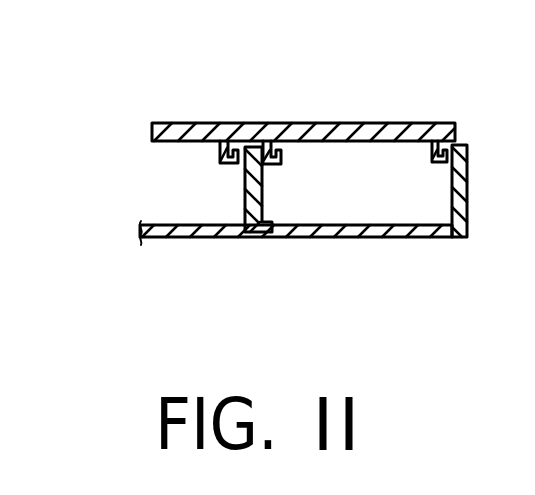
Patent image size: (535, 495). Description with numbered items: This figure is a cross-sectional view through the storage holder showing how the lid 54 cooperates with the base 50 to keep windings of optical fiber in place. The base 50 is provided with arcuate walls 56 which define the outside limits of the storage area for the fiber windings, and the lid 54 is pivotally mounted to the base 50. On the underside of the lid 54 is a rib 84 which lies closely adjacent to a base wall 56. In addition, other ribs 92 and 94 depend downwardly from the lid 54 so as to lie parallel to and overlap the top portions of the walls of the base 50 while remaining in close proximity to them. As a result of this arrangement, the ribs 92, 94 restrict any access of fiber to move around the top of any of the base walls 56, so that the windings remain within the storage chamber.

The base 50 is at (353, 278).
The lid 54 is at (332, 122).
The wall 56 is at (245, 192).
The rib 84 is at (220, 147).
The rib 92 is at (277, 152).
The rib 94 is at (441, 153).